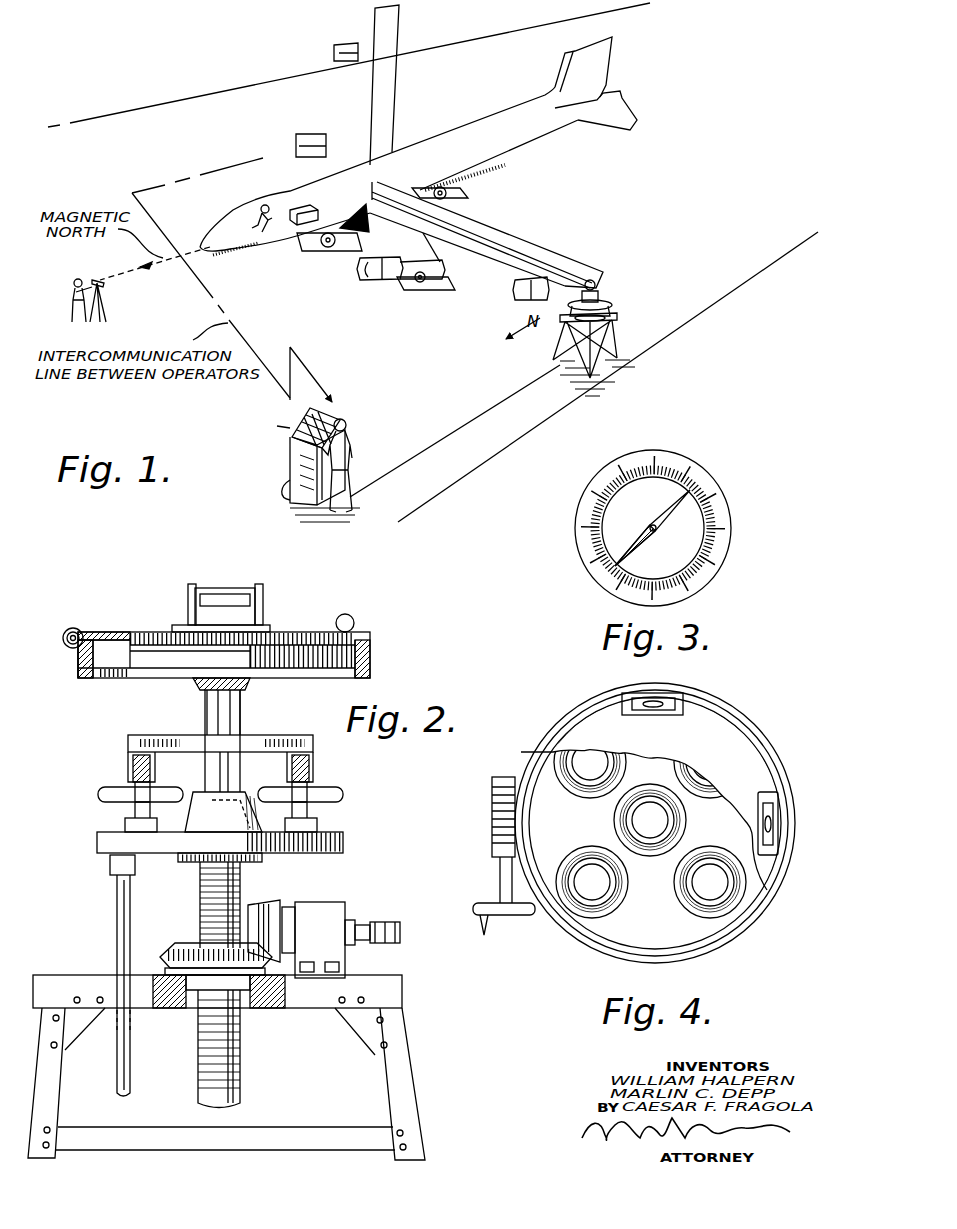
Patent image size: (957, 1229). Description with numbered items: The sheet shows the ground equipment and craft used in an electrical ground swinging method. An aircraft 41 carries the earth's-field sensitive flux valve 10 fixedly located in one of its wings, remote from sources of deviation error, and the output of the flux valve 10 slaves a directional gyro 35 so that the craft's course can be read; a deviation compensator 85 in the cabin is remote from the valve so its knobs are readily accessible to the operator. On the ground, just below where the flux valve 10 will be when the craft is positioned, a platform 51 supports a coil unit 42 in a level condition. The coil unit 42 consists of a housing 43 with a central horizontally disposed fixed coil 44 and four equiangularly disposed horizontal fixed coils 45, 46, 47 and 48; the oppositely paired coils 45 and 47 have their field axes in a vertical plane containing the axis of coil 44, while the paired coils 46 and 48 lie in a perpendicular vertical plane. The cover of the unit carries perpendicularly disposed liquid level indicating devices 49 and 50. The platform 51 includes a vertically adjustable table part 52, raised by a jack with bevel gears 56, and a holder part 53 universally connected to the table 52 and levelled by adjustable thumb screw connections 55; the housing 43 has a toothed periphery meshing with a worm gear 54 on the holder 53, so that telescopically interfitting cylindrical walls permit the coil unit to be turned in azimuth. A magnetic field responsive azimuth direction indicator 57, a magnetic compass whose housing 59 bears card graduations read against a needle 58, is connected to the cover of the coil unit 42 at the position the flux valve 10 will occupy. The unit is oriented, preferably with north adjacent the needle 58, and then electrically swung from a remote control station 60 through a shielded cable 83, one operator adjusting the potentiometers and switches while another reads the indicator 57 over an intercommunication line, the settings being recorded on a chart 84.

In FIG. 1, the flux valve 10 is at (594, 285).
In FIG. 1, the directional gyro 35 is at (240, 225).
In FIG. 1, the aircraft 41 is at (432, 158).
In FIG. 1, the coil unit 42 is at (603, 302).
In FIG. 2, the coil unit 42 is at (303, 628).
In FIG. 4, the coil unit 42 is at (598, 962).
In FIG. 2, the housing 43 is at (77, 660).
In FIG. 4, the housing 43 is at (735, 940).
In FIG. 4, the central coil 44 is at (657, 850).
In FIG. 4, the fixed coil 45 is at (560, 866).
In FIG. 4, the fixed coil 46 is at (562, 790).
In FIG. 4, the fixed coil 47 is at (713, 800).
In FIG. 4, the fixed coil 48 is at (700, 915).
In FIG. 4, the level indicating device 49 is at (652, 715).
In FIG. 4, the level indicating device 50 is at (768, 793).
In FIG. 1, the platform 51 is at (607, 345).
In FIG. 2, the platform 51 is at (402, 1065).
In FIG. 2, the table part 52 is at (343, 842).
In FIG. 2, the holder part 53 is at (90, 680).
In FIG. 4, the holder part 53 is at (548, 728).
In FIG. 2, the worm gear 54 is at (73, 630).
In FIG. 4, the worm gear 54 is at (492, 806).
In FIG. 2, the thumb screw connections 55 is at (112, 790).
In FIG. 2, the bevel gears 56 is at (352, 617).
In FIG. 2, the azimuth direction indicator 57 is at (232, 582).
In FIG. 3, the azimuth direction indicator 57 is at (572, 527).
In FIG. 3, the needle 58 is at (672, 520).
In FIG. 3, the indicator housing 59 is at (615, 596).
In FIG. 1, the control station 60 is at (290, 456).
In FIG. 1, the shielded cable 83 is at (461, 426).
In FIG. 1, the chart 84 is at (303, 413).
In FIG. 1, the deviation compensator 85 is at (302, 207).